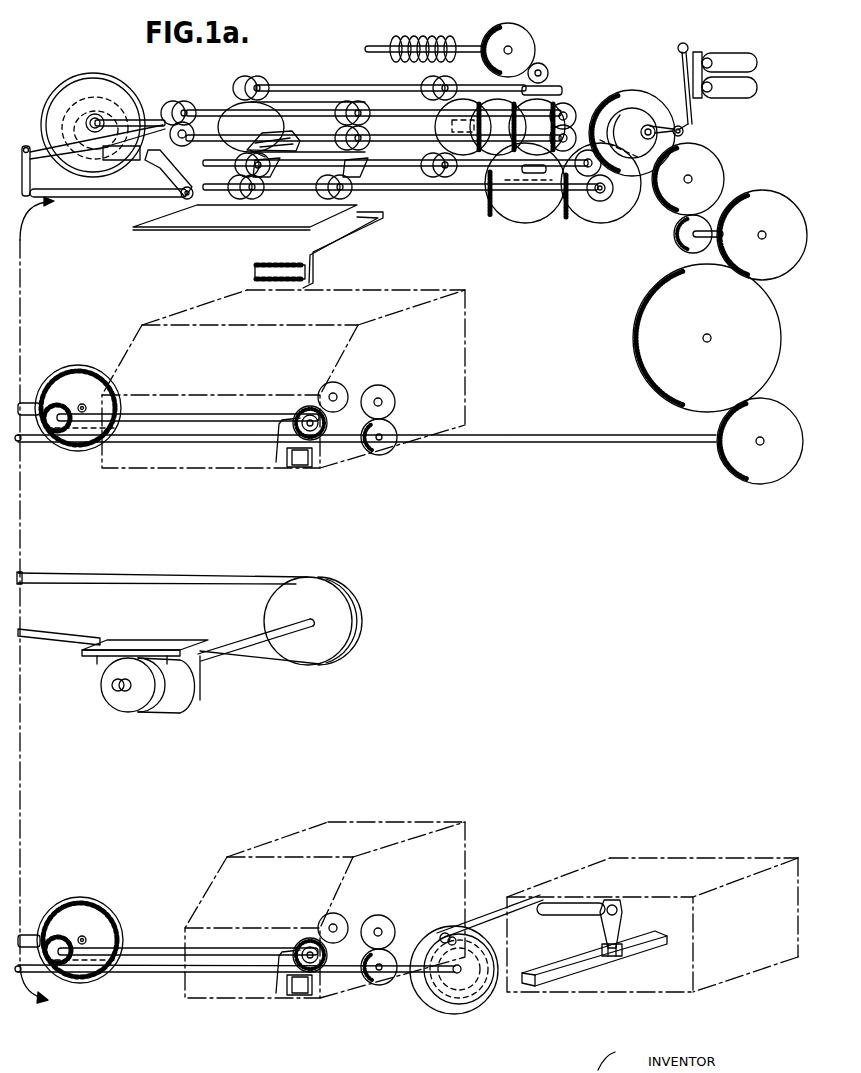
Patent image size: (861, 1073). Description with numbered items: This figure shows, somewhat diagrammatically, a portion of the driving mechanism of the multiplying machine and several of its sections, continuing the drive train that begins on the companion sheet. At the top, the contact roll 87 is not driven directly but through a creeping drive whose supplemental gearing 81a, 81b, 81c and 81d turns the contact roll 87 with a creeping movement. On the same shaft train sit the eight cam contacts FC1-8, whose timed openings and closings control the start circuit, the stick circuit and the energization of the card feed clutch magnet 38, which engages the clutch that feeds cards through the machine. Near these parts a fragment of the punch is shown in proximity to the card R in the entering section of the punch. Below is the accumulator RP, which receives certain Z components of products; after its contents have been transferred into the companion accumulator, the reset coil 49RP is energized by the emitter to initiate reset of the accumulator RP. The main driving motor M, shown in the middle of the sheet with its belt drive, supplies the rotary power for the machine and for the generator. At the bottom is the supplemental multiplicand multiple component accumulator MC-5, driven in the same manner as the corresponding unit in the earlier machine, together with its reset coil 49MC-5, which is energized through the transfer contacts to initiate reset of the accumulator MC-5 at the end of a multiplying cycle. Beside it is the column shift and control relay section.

The contact roll 87 is at (240, 105).
The FC cam contacts FC1-8 is at (455, 42).
The supplemental gearing 81d is at (477, 103).
The supplemental gearing 81a is at (562, 99).
The supplemental gearing 81c is at (527, 207).
The supplemental gearing 81b is at (606, 208).
The card feed clutch magnet 38 is at (733, 82).
The card R is at (200, 218).
The accumulator RP is at (283, 379).
The reset coil 49RP is at (300, 468).
The main driving motor M is at (176, 690).
The supplemental multiplicand multiple component accumulator MC-5 is at (325, 910).
The reset coil 49MC-5 is at (300, 998).